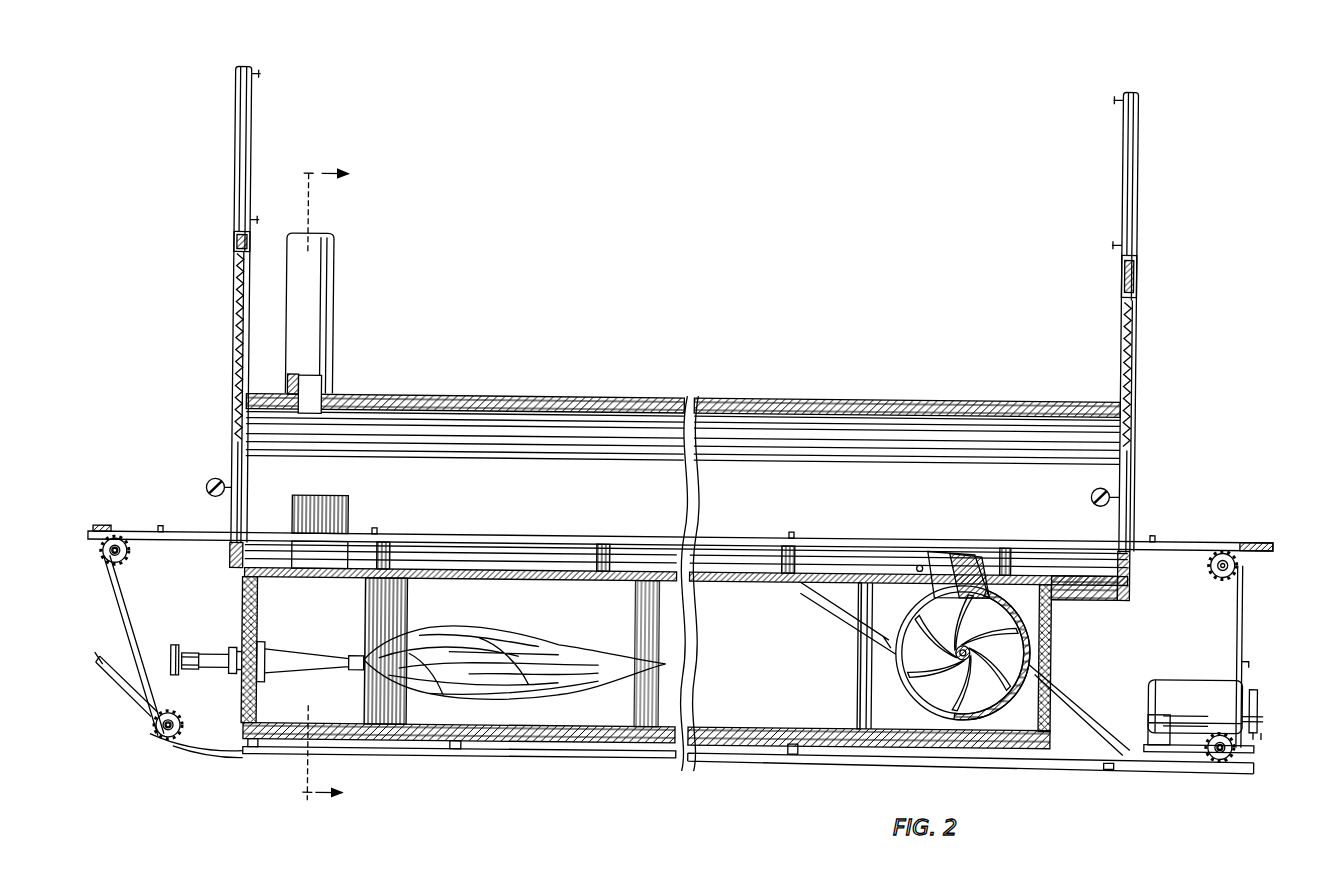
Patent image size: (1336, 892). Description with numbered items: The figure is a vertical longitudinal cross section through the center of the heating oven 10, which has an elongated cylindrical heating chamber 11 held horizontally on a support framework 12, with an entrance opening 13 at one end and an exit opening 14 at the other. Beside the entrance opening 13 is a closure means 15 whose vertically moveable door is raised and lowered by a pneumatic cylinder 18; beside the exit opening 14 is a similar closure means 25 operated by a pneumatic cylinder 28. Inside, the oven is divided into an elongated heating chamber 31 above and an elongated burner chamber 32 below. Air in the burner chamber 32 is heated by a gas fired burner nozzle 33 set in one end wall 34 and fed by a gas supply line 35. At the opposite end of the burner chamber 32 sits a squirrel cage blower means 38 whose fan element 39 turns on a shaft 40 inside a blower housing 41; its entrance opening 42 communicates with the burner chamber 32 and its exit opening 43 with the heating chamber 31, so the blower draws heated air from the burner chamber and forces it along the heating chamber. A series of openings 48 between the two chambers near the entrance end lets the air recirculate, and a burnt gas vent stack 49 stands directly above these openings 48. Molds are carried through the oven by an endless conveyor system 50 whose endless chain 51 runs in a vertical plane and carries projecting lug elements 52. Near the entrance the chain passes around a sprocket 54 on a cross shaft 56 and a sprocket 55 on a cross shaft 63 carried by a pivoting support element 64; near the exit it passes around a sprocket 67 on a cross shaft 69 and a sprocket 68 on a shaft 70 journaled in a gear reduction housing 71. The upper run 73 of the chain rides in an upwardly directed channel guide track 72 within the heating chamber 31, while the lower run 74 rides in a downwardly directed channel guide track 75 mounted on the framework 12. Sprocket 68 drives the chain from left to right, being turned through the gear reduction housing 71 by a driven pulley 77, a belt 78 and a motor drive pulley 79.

The heating oven 10 is at (590, 392).
The heating chamber 11 is at (812, 390).
The support framework 12 is at (470, 758).
The entrance opening 13 is at (237, 461).
The exit opening 14 is at (1127, 469).
The closure means 15 is at (234, 289).
The pneumatic cylinder 18 is at (244, 143).
The closure means 25 is at (1134, 311).
The pneumatic cylinder 28 is at (1131, 187).
The heating chamber 31 is at (905, 489).
The burner chamber 32 is at (615, 632).
The burner nozzle 33 is at (330, 655).
The end wall 34 is at (258, 622).
The gas supply line 35 is at (198, 650).
The squirrel cage blower means 38 is at (910, 694).
The fan element 39 is at (940, 704).
The shaft 40 is at (985, 650).
The blower housing 41 is at (885, 636).
The entrance opening 42 is at (905, 676).
The exit opening 43 is at (917, 558).
The openings 48 is at (339, 492).
The burnt gas vent stack 49 is at (329, 332).
The endless conveyor system 50 is at (198, 530).
The endless chain 51 is at (128, 625).
The lug elements 52 is at (160, 529).
The sprocket 54 is at (124, 562).
The sprocket 55 is at (178, 713).
The cross shaft 56 is at (130, 552).
The cross shaft 63 is at (190, 733).
The support element 64 is at (130, 690).
The sprocket 67 is at (1236, 567).
The sprocket 68 is at (1232, 749).
The cross shaft 69 is at (1209, 552).
The shaft 70 is at (1220, 746).
The gear reduction housing 71 is at (1215, 705).
The guide track 72 is at (606, 529).
The upper run 73 is at (230, 545).
The lower run 74 is at (208, 750).
The guide track 75 is at (375, 752).
The driven pulley 77 is at (1260, 722).
The belt 78 is at (1265, 706).
The motor drive pulley 79 is at (1259, 690).